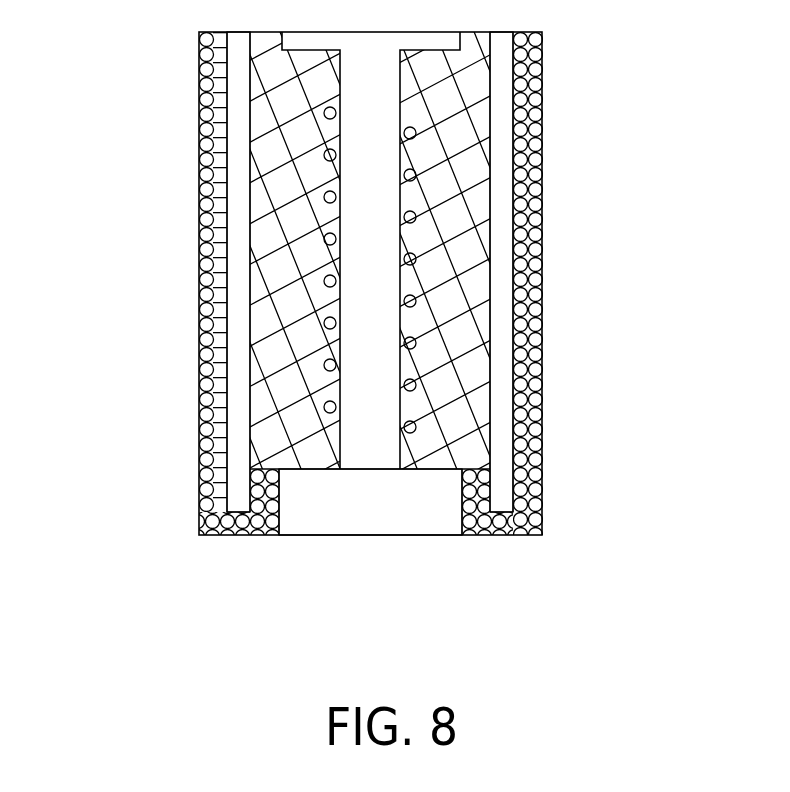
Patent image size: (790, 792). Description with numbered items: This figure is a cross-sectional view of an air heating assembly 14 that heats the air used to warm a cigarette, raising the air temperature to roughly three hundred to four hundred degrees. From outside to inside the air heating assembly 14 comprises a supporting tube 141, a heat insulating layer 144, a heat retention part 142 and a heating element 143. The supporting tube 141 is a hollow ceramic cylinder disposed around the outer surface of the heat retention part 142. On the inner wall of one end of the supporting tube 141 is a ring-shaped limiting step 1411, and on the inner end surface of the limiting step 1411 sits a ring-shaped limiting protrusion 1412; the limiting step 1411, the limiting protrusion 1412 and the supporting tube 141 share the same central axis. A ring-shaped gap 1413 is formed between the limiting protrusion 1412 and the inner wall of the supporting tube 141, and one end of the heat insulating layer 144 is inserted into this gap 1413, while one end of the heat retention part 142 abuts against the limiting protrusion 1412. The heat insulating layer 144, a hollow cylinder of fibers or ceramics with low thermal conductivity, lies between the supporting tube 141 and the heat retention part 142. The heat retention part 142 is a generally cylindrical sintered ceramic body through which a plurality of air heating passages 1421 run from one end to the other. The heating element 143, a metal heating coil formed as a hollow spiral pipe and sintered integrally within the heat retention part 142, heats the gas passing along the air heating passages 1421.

The air heating assembly 14 is at (385, 23).
The supporting tube 141 is at (543, 398).
The limiting step 1411 is at (495, 527).
The limiting protrusion 1412 is at (462, 489).
The gap 1413 is at (525, 513).
The heat retention part 142 is at (340, 108).
The air heating passage 1421 is at (352, 278).
The heating element 143 is at (337, 197).
The heat insulating layer 144 is at (492, 272).